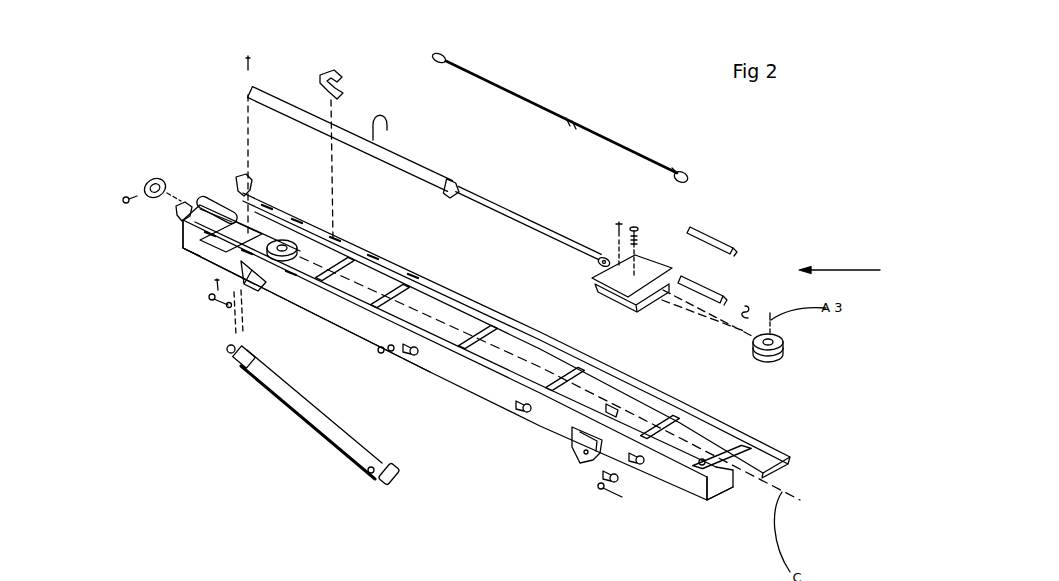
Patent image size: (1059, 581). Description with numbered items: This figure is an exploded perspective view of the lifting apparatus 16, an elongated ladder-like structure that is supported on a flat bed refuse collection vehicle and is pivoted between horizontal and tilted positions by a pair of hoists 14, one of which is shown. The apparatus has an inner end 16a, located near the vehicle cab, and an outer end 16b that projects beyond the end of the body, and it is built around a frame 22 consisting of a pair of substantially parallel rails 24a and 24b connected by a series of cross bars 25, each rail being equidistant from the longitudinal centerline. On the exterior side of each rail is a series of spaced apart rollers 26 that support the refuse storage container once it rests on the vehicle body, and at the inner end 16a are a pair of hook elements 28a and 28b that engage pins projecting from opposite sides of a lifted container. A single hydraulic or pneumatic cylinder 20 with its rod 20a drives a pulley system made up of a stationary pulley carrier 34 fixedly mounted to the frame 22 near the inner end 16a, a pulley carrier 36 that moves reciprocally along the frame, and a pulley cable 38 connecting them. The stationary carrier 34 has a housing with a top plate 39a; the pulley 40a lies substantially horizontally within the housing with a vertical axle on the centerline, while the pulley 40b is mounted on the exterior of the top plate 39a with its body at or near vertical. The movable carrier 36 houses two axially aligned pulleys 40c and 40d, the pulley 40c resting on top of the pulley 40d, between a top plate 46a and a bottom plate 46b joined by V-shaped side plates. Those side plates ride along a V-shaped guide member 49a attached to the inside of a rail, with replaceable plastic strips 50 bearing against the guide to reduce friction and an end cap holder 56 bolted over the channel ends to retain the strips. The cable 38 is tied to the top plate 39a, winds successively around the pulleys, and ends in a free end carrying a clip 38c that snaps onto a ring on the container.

The hoist 14 is at (288, 400).
The lifting apparatus 16 is at (451, 287).
The inner end 16a is at (183, 248).
The outer end 16b is at (679, 492).
The cylinder 20 is at (430, 183).
The rod 20a is at (504, 218).
The frame 22 is at (430, 373).
The rail 24a is at (496, 393).
The rail 24b is at (350, 243).
The cross bars 25 is at (330, 278).
The rollers 26 is at (412, 357).
The hook element 28a is at (187, 200).
The hook element 28b is at (240, 200).
The stationary pulley carrier 34 is at (221, 244).
The pulley carrier 36 is at (720, 276).
The pulley cable 38 is at (599, 117).
The clip 38c is at (680, 170).
The top plate 39a is at (233, 203).
The pulley 40a is at (286, 255).
The pulley 40b is at (143, 177).
The pulley 40c is at (784, 340).
The pulley 40d is at (778, 362).
The top plate 46a is at (600, 263).
The bottom plate 46b is at (647, 297).
The V-shaped guide member 49a is at (743, 236).
The plastic strips 50 is at (650, 273).
The end cap holder 56 is at (748, 302).